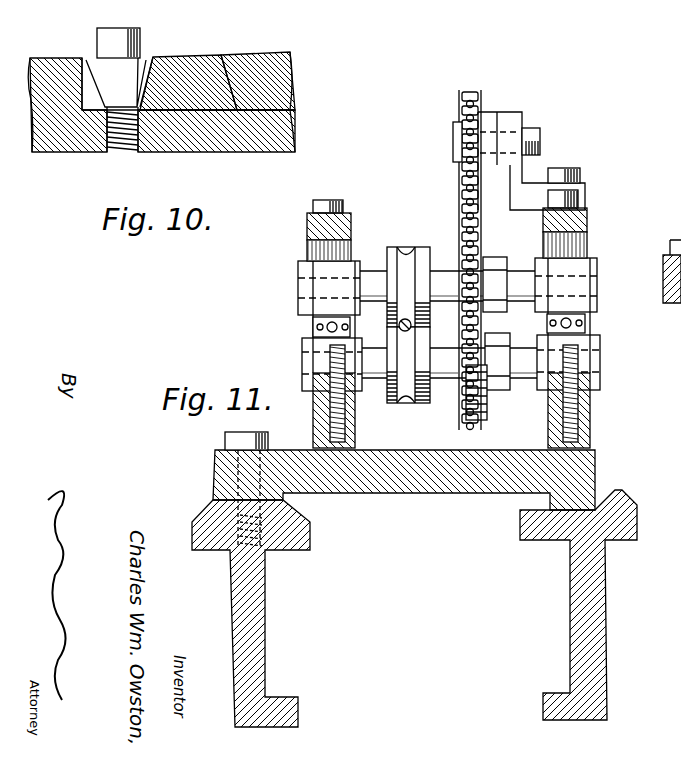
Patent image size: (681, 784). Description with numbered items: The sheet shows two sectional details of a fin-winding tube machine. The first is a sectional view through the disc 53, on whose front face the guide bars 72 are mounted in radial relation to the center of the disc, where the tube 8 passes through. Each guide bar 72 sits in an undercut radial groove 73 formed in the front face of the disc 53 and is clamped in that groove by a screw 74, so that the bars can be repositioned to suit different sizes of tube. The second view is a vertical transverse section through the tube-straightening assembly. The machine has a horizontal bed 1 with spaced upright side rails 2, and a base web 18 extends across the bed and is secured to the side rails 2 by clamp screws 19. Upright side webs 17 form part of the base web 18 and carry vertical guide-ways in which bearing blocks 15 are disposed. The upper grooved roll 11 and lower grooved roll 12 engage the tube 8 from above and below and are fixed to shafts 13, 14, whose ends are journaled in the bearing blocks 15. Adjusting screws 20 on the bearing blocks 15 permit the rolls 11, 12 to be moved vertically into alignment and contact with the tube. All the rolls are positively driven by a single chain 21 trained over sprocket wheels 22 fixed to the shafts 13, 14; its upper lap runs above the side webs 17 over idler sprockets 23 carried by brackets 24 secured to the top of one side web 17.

In FIG. 11, the horizontal bed 1 is at (419, 588).
In FIG. 11, the upright side rails 2 is at (236, 601).
In FIG. 11, the tube stock 8 is at (413, 328).
In FIG. 11, the upper grooved roll 11 is at (417, 249).
In FIG. 11, the lower grooved roll 12 is at (405, 402).
In FIG. 11, the shaft of upper roll 13 is at (441, 272).
In FIG. 11, the shaft of lower roll 14 is at (456, 379).
In FIG. 11, the bearing blocks 15 is at (299, 296).
In FIG. 11, the upright side webs 17 is at (312, 408).
In FIG. 11, the base web 18 is at (381, 490).
In FIG. 11, the clamp screws 19 is at (232, 442).
In FIG. 11, the adjusting screws 20 is at (312, 206).
In FIG. 11, the chain 21 is at (460, 100).
In FIG. 11, the sprocket wheels 22 is at (488, 262).
In FIG. 11, the idler sprockets 23 is at (456, 143).
In FIG. 11, the brackets 24 is at (514, 173).
In FIG. 10, the disc 53 is at (293, 111).
In FIG. 10, the guide bars 72 is at (181, 58).
In FIG. 10, the undercut radial grooves 73 is at (226, 72).
In FIG. 10, the screws 74 is at (100, 46).